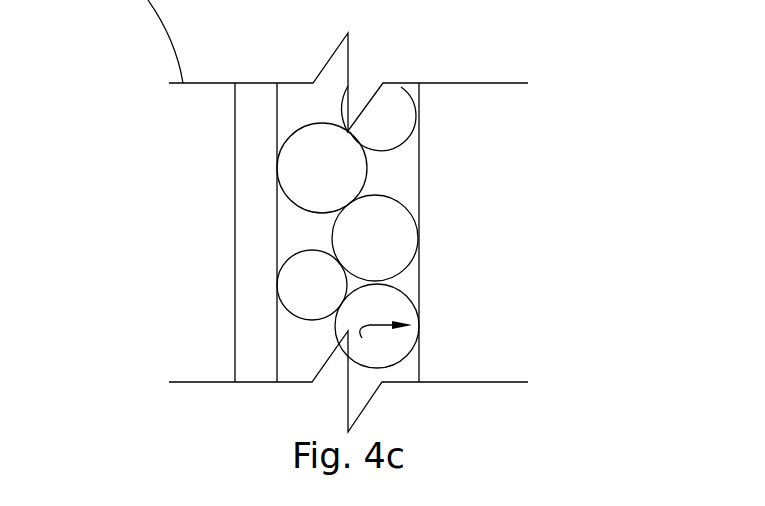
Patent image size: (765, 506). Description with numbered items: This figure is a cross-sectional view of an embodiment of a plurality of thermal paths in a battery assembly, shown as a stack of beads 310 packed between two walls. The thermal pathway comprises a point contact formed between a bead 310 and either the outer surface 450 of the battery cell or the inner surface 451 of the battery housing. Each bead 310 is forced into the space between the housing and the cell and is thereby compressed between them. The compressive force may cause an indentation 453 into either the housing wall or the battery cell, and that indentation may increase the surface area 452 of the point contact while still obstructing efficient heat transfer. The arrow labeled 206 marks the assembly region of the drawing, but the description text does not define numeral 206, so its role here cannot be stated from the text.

The channel housing 206 is at (190, 174).
The outer surface 450 is at (419, 181).
The bead 310 is at (378, 213).
The inner surface 451 is at (277, 233).
The surface area 452 is at (360, 348).
The indentation 453 is at (421, 321).